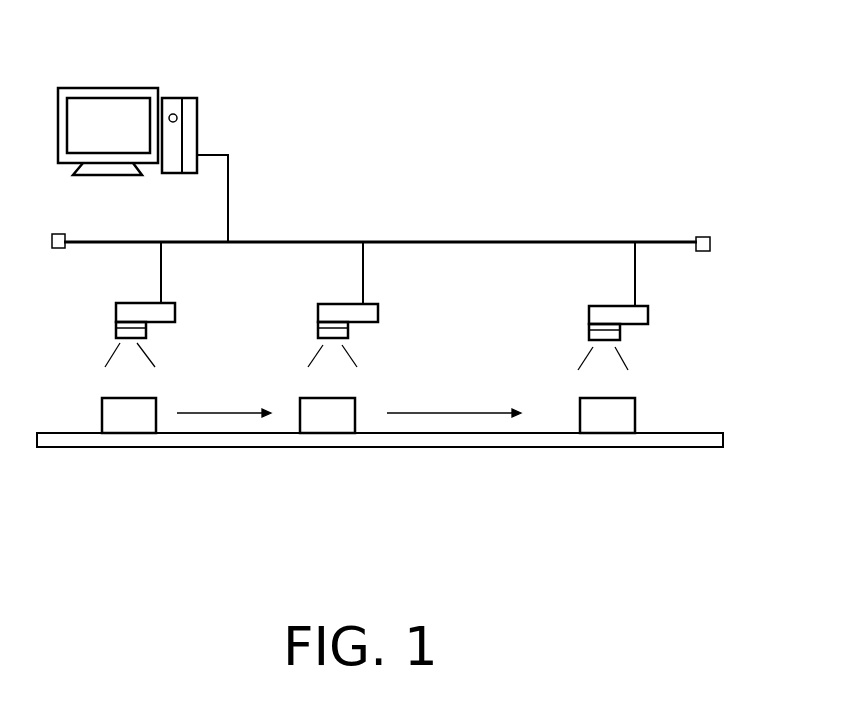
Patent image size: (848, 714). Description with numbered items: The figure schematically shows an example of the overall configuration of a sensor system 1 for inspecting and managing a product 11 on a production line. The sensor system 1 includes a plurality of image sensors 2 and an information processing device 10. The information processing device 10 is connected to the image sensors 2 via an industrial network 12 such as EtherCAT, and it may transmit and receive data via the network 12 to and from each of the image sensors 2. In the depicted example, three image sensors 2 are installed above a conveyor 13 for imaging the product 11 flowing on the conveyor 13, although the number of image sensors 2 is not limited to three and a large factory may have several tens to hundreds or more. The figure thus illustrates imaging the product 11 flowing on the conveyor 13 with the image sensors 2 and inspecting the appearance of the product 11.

The sensor system 1 is at (557, 68).
The information processing device 10 is at (173, 97).
The industrial network 12 is at (513, 242).
The image sensor 2 is at (116, 313).
The product 11 is at (102, 408).
The conveyor 13 is at (203, 447).